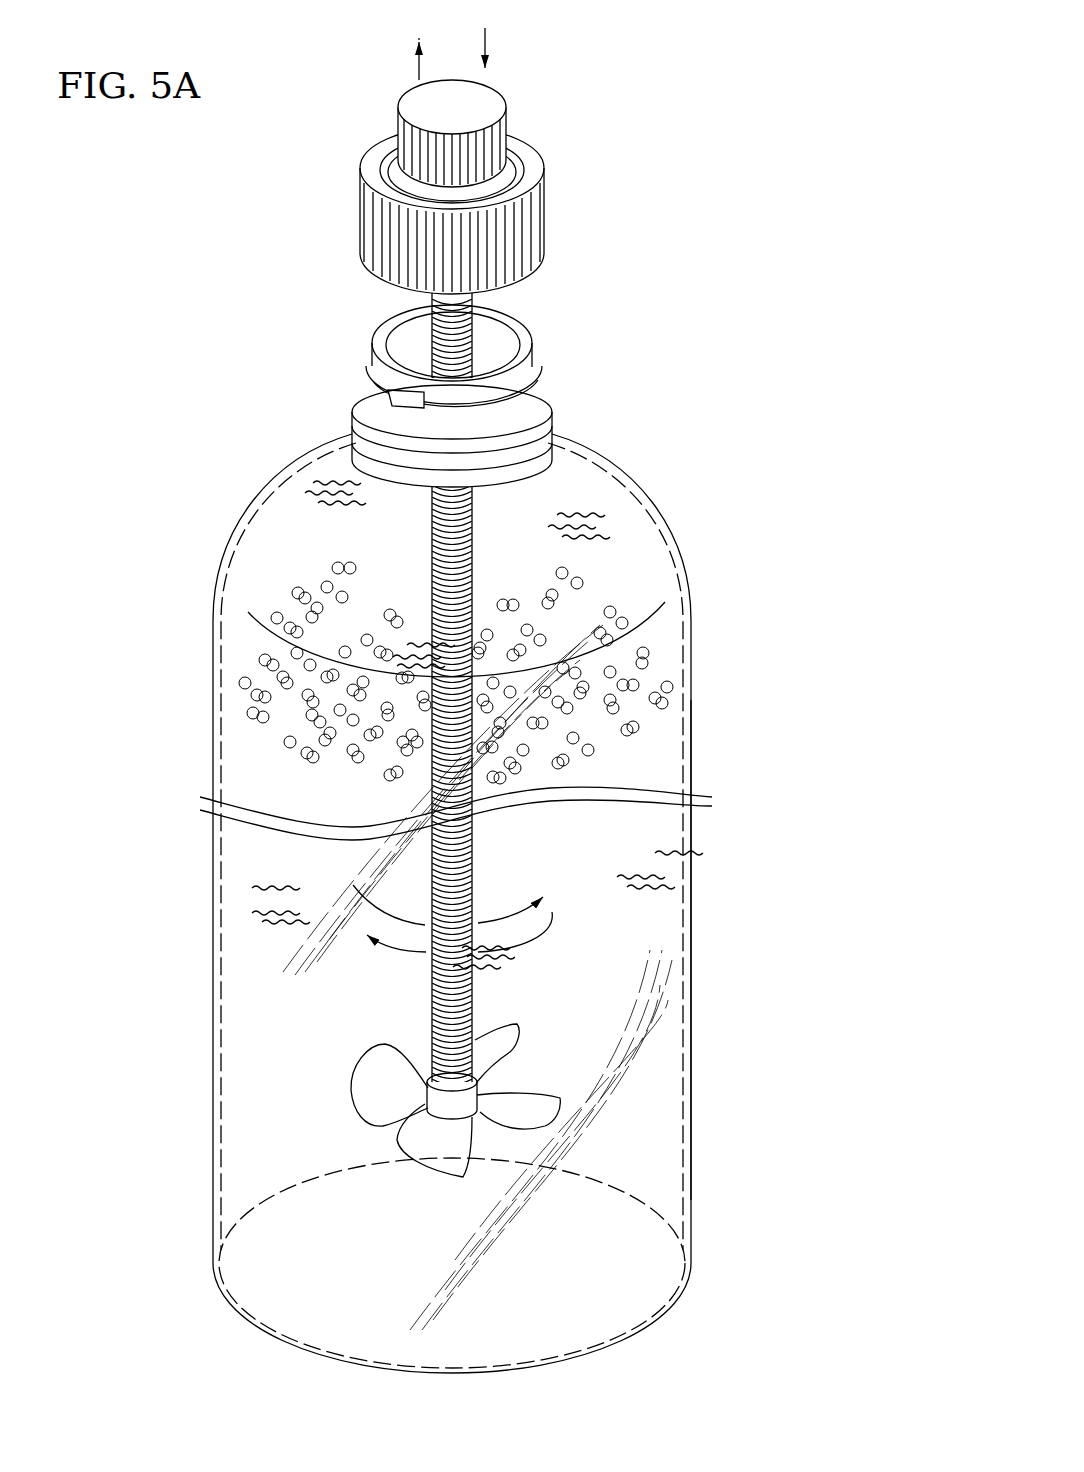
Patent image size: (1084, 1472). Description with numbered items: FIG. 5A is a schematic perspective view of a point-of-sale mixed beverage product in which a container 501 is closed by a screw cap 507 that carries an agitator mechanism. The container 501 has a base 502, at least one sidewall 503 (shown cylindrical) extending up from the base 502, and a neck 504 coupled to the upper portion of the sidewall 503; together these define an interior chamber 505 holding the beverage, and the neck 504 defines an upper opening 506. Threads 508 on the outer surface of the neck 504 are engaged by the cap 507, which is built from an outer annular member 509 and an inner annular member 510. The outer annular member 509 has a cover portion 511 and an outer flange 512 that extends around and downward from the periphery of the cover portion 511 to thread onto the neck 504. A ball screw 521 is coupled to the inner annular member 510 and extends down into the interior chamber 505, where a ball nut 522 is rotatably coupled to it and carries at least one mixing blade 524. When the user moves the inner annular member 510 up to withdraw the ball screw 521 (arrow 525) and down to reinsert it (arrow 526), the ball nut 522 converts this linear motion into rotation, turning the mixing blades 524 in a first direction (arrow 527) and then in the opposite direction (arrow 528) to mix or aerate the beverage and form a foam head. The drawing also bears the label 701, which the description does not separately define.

The container 501 is at (692, 540).
The base 502 is at (637, 1332).
The sidewall 503 is at (697, 858).
The neck 504 is at (540, 402).
The interior chamber 505 is at (668, 655).
The upper opening 506 is at (530, 338).
The screw cap 507 is at (597, 144).
The threads 508 is at (365, 400).
The outer annular member 509 is at (550, 226).
The inner annular member 510 is at (402, 53).
The cover portion 511 is at (545, 162).
The outer flange 512 is at (380, 247).
The ball screw 521 is at (432, 545).
The ball nut 522 is at (480, 1088).
The mixing blade 524 is at (367, 1080).
The arrow 525 is at (412, 65).
The arrow 526 is at (490, 42).
The arrow 527 is at (503, 913).
The arrow 528 is at (537, 940).
The mixing bottle assembly 701 is at (658, 408).